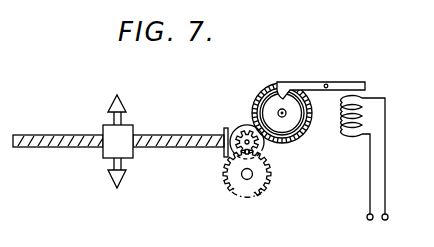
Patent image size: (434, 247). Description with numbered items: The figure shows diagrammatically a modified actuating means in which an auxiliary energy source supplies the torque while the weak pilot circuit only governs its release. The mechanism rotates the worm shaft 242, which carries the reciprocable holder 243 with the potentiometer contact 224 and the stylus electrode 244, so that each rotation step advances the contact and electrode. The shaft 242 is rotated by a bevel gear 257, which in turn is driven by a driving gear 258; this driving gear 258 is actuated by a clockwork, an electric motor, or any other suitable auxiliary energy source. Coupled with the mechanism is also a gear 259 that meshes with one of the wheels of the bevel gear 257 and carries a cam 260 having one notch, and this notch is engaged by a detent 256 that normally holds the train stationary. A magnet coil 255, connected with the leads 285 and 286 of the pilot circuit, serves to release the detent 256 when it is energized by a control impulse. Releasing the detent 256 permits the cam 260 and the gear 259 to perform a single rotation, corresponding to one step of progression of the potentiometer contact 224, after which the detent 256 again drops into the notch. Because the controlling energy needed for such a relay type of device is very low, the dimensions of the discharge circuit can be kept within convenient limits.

The potentiometer contact 224 is at (112, 97).
The worm shaft 242 is at (53, 136).
The reciprocable holder 243 is at (120, 147).
The stylus electrode 244 is at (112, 178).
The magnet coil 255 is at (364, 108).
The detent 256 is at (314, 82).
The bevel gear 257 is at (238, 128).
The driving gear 258 is at (228, 184).
The gear 259 is at (259, 97).
The cam 260 is at (288, 122).
The lead 285 is at (387, 184).
The lead 286 is at (368, 196).